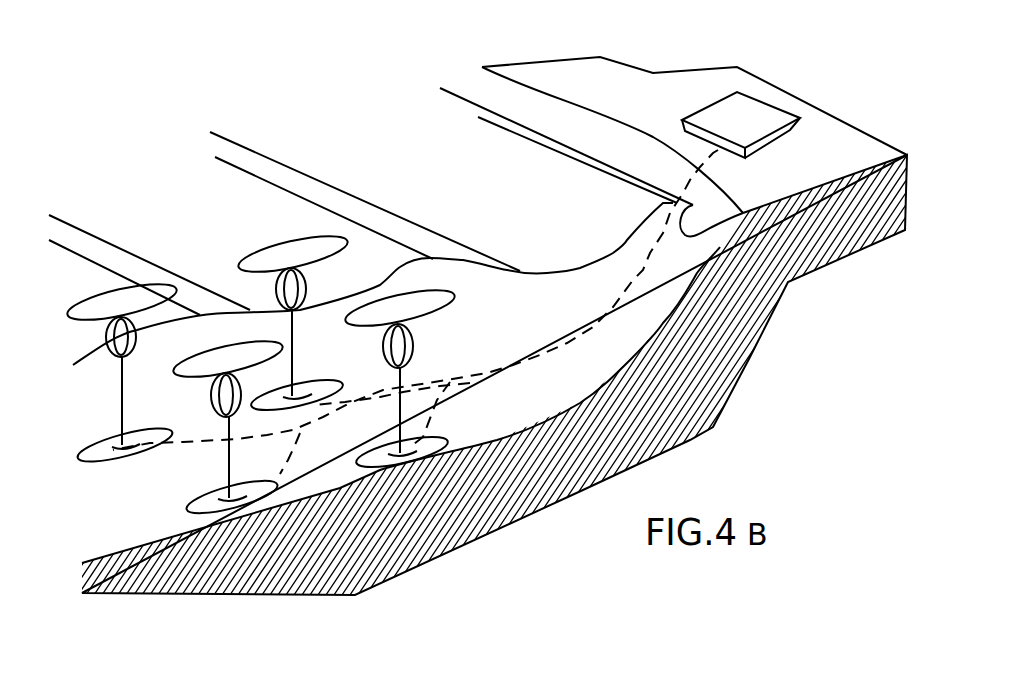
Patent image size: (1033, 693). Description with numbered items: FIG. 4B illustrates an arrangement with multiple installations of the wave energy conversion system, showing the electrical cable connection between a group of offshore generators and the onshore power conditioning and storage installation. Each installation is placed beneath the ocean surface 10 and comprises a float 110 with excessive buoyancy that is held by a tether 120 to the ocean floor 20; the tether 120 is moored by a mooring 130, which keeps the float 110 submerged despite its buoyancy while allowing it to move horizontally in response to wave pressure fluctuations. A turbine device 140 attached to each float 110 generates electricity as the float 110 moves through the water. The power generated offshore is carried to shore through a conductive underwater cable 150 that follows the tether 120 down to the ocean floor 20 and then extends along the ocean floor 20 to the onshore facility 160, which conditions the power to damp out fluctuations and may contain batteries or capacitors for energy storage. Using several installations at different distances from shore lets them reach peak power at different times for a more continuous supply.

The ocean surface 10 is at (434, 184).
The ocean floor 20 is at (516, 375).
The float 110 is at (174, 378).
The tether 120 is at (277, 478).
The mooring 130 is at (188, 505).
The turbine device 140 is at (212, 418).
The conductive underwater cable 150 is at (540, 355).
The onshore facility 160 is at (760, 112).